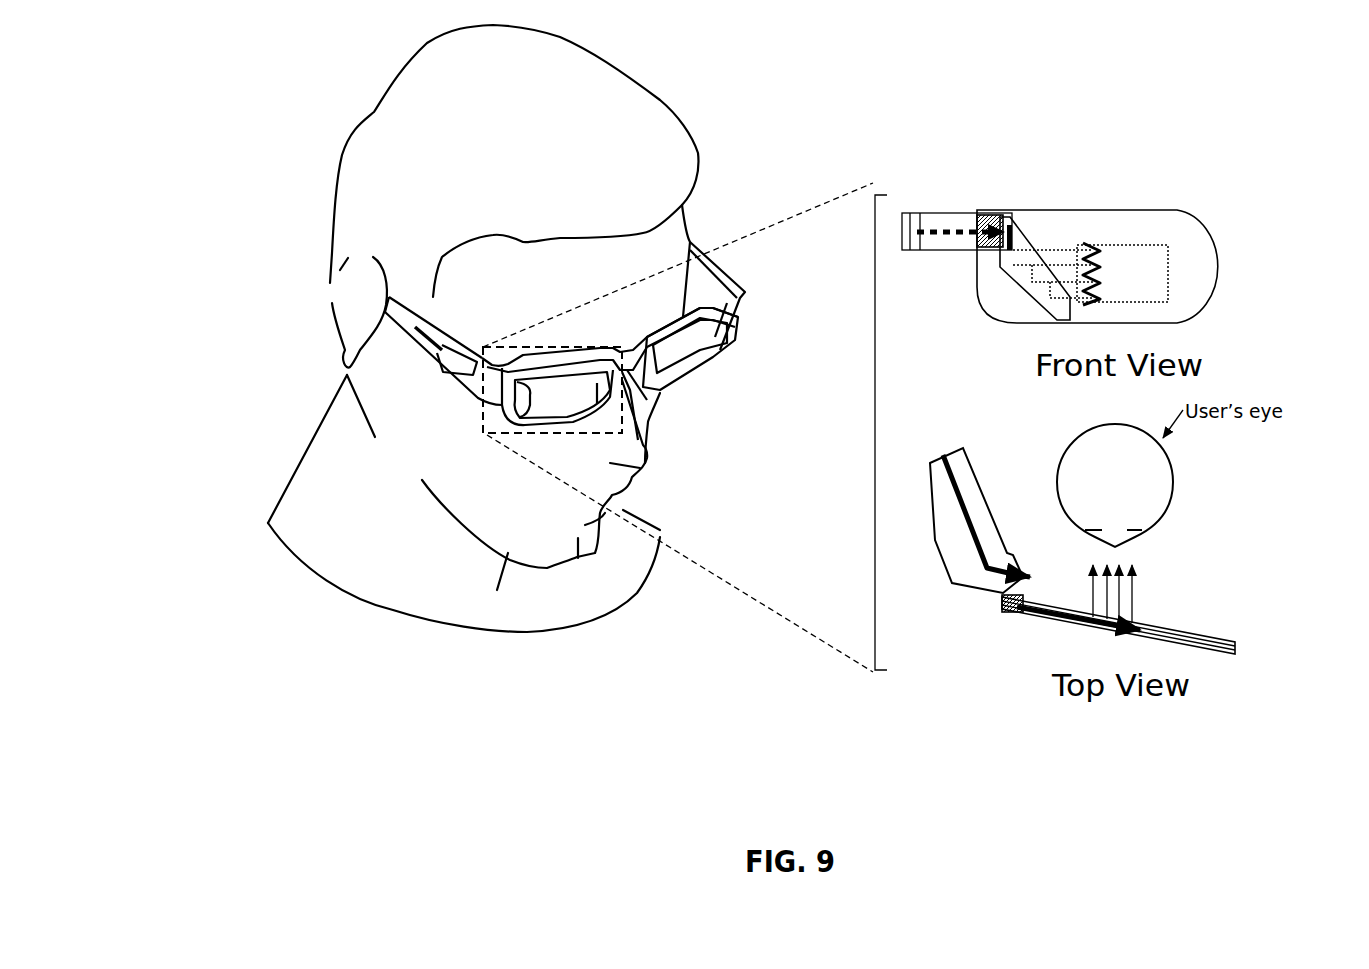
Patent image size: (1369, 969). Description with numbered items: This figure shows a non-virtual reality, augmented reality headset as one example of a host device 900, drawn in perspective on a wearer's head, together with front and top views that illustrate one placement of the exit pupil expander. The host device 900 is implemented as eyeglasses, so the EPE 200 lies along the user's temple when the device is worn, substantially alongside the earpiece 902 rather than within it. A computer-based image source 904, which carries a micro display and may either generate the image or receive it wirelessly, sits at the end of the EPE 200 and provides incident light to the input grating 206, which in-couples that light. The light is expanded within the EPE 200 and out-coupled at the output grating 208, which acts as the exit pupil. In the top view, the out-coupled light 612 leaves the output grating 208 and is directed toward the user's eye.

The host device 900 is at (720, 260).
The earpiece 902 is at (385, 312).
The image source 904 is at (492, 384).
The exit pupil expander 200 is at (567, 403).
The input grating 206 is at (985, 223).
The output grating 208 is at (1128, 270).
The out-coupled light 612 is at (1242, 580).